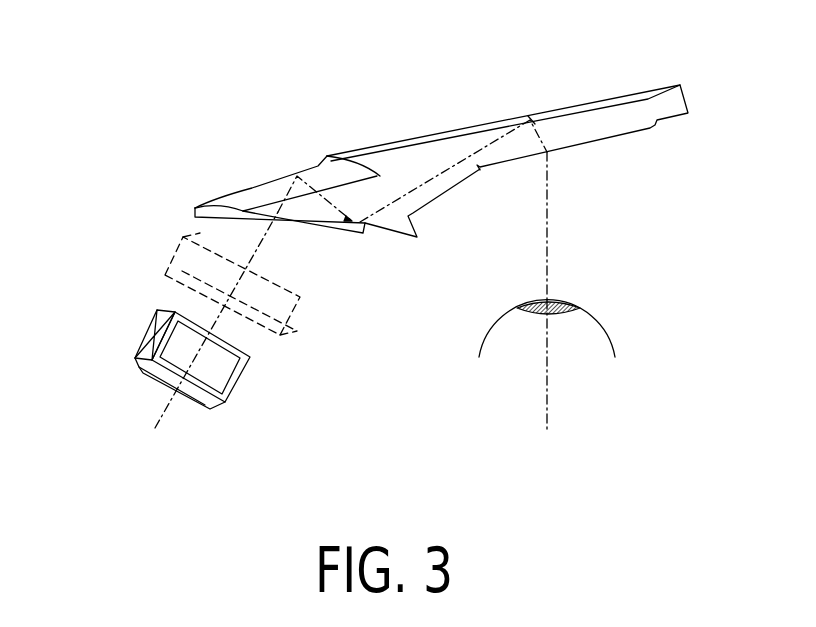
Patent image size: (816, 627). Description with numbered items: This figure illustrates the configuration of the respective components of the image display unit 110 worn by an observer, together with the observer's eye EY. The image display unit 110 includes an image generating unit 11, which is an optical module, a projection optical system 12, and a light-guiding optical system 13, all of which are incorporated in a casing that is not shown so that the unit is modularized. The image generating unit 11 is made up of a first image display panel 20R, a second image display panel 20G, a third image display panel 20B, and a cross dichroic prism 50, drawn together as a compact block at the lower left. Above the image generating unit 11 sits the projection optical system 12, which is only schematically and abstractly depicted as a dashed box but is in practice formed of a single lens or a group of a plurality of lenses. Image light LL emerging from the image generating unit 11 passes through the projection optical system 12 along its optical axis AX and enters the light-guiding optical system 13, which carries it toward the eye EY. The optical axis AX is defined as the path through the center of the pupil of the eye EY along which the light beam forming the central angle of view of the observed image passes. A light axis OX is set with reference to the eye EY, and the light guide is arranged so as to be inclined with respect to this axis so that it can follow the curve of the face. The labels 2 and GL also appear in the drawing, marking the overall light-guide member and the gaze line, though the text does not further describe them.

The image display unit 110 is at (409, 125).
The light guide optical system 2 is at (163, 196).
The light-guiding optical system 13 is at (381, 150).
The projection optical system 12 is at (175, 250).
The image generating unit 11 is at (191, 363).
The cross dichroic prism 50 is at (138, 357).
The third image display panel 20B is at (217, 372).
The second image display panel 20G is at (200, 408).
The first image display panel 20R is at (230, 403).
The image light LL is at (259, 243).
The optical axis AX is at (211, 331).
The light axis OX is at (547, 207).
The gaze line GL is at (547, 271).
The eye EY is at (502, 322).